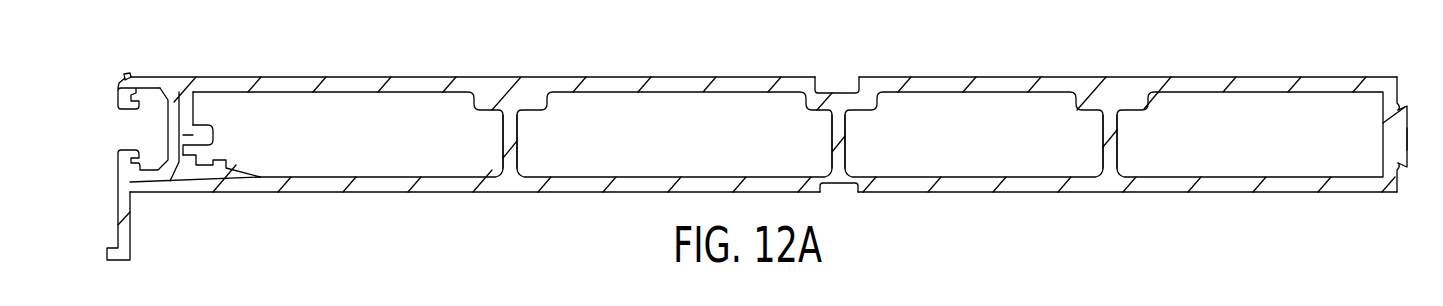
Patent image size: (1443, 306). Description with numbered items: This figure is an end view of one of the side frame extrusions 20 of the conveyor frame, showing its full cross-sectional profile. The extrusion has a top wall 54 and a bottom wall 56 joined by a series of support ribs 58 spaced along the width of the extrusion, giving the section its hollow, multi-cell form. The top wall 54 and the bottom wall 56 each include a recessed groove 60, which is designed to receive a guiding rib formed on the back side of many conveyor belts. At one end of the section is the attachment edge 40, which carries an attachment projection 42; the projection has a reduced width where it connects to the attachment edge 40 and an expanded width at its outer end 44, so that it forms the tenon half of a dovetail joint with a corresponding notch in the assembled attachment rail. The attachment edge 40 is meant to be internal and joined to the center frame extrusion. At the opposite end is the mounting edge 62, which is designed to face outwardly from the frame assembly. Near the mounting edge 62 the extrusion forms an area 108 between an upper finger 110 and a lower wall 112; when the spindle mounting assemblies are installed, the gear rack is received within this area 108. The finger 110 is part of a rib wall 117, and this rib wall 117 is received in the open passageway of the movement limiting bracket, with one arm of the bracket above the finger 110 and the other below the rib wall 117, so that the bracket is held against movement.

The side frame extrusion 20 is at (978, 65).
The attachment edge 40 is at (1398, 107).
The attachment projection 42 is at (1412, 148).
The outer end 44 is at (1413, 120).
The top wall 54 is at (370, 77).
The bottom wall 56 is at (372, 190).
The support ribs 58 is at (517, 135).
The recessed groove 60 is at (840, 93).
The mounting edge 62 is at (113, 108).
The area 108 is at (215, 163).
The upper finger 110 is at (200, 140).
The lower wall 112 is at (207, 177).
The rib wall 117 is at (187, 118).